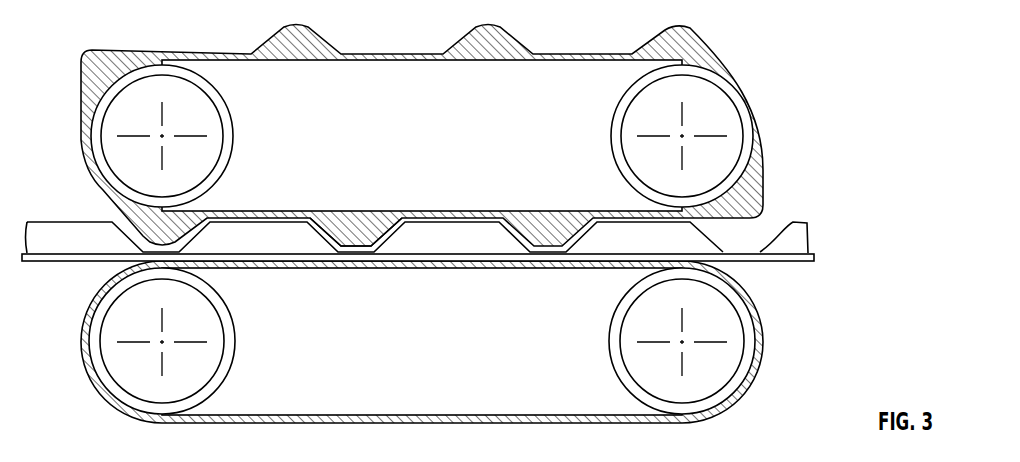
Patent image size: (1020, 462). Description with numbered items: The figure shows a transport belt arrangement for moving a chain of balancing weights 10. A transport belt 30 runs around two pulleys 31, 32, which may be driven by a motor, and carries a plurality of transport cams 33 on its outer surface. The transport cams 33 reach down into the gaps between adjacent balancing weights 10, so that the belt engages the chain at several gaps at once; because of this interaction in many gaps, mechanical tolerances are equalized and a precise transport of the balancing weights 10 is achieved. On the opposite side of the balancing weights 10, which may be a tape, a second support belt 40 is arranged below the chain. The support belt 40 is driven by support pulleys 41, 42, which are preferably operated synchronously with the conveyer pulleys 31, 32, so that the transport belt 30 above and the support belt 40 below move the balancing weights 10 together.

The balancing weight 10 is at (52, 238).
The transport belt 30 is at (397, 58).
The pulley 31 is at (233, 133).
The pulley 32 is at (611, 134).
The transport cam 33 is at (347, 228).
The support belt 40 is at (448, 263).
The support pulley 41 is at (235, 339).
The support pulley 42 is at (609, 341).